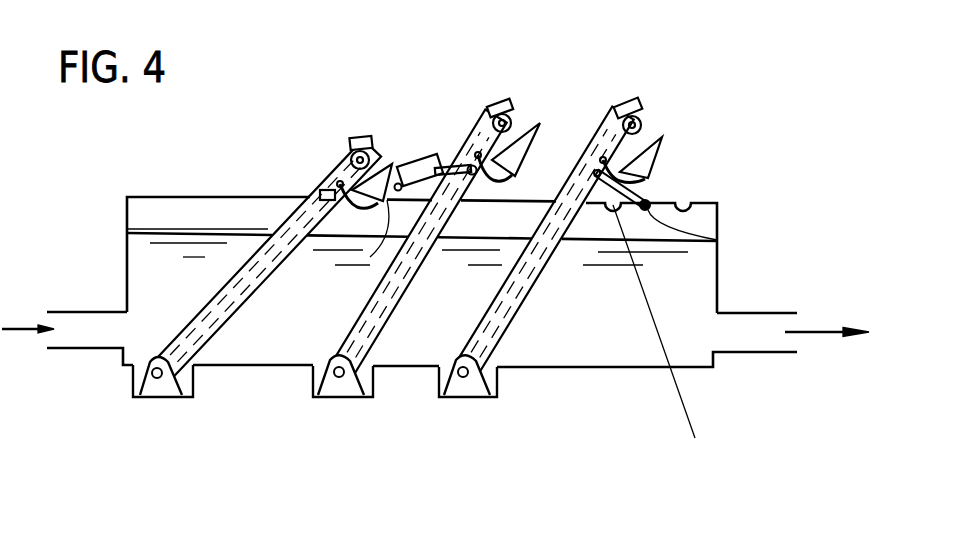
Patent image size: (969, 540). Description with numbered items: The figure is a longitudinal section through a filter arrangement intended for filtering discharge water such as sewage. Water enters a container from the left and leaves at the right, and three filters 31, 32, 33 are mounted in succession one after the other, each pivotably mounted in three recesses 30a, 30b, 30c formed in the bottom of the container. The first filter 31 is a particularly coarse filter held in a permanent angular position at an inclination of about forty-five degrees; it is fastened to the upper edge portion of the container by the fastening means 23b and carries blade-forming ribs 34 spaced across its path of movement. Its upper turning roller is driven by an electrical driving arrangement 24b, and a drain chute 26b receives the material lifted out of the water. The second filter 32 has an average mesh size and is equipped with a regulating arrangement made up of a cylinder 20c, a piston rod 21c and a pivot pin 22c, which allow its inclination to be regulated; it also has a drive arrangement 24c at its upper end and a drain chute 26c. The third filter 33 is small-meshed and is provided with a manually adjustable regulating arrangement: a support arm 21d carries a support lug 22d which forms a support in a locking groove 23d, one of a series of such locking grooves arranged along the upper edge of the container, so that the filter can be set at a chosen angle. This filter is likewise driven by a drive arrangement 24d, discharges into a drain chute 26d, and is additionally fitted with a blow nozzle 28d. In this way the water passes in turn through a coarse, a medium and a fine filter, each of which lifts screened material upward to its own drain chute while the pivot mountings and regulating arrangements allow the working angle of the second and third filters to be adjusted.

The regulating arrangement 20c is at (417, 157).
The regulating arrangement 21c is at (435, 163).
The support arm 21d is at (674, 344).
The regulating arrangement 22c is at (467, 165).
The support lug 22d is at (650, 202).
The fastening means 23b is at (316, 198).
The locking groove 23d is at (717, 240).
The electrical driving arrangement 24b is at (350, 138).
The drive arrangement 24c is at (510, 103).
The drive arrangement 24d is at (628, 100).
The drain chute 26b is at (322, 183).
The drain chute 26c is at (530, 140).
The drain chute 26d is at (650, 153).
The blow nozzle 28d is at (624, 134).
The recess 30a is at (187, 394).
The recess 30b is at (367, 397).
The recess 30c is at (490, 396).
The filter 31 is at (218, 325).
The filter 32 is at (389, 310).
The filter 33 is at (517, 300).
The blade-forming ribs 34 is at (240, 276).